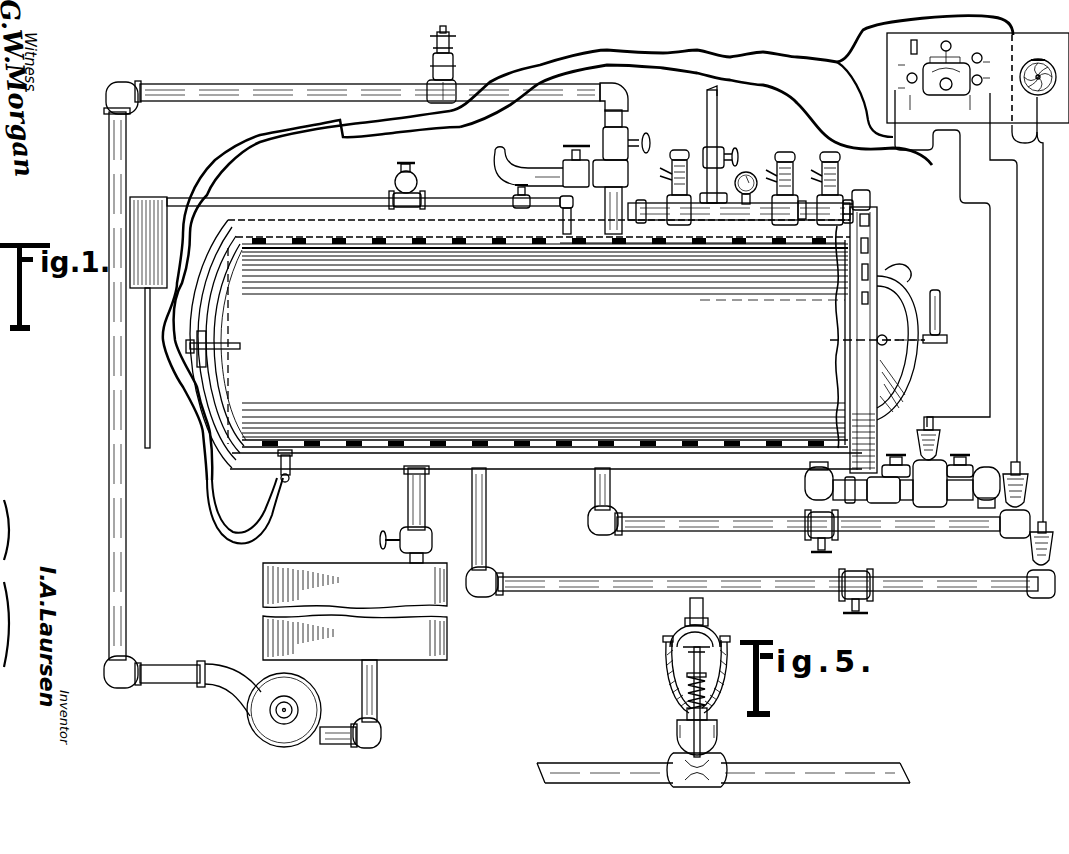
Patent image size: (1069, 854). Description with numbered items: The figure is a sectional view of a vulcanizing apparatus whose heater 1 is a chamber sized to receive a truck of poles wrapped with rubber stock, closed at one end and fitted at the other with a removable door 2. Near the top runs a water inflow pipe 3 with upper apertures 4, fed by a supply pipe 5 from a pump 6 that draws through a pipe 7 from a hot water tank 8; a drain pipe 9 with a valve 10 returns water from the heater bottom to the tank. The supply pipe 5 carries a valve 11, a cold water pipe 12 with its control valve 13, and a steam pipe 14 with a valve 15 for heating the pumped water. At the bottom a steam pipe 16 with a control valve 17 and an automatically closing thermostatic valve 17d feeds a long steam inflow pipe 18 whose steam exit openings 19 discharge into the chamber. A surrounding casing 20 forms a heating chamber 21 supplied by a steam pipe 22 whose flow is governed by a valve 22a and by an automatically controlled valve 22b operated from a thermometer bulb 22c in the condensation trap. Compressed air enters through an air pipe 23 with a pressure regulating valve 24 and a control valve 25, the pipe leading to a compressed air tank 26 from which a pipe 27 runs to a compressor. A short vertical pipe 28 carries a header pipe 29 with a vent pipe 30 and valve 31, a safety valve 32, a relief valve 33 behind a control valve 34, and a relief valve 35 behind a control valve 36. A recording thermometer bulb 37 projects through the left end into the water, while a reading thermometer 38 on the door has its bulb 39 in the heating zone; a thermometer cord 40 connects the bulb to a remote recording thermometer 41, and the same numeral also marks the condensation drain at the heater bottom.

In FIG. 1, the heater 1 is at (226, 417).
In FIG. 1, the removable door 2 is at (883, 280).
In FIG. 1, the water inflow pipe 3 is at (578, 262).
In FIG. 1, the apertures 4 is at (421, 245).
In FIG. 1, the supply pipe 5 is at (113, 528).
In FIG. 1, the pump 6 is at (297, 727).
In FIG. 1, the pipe 7 is at (379, 707).
In FIG. 1, the hot water tank 8 is at (433, 645).
In FIG. 1, the drain pipe 9 is at (421, 500).
In FIG. 1, the valve 10 is at (429, 534).
In FIG. 1, the valve 11 is at (626, 131).
In FIG. 1, the cold water pipe 12 is at (513, 166).
In FIG. 1, the control valve 13 is at (578, 148).
In FIG. 1, the steam pipe 14 is at (451, 41).
In FIG. 1, the valve 15 is at (432, 63).
In FIG. 1, the steam pipe 16 is at (695, 524).
In FIG. 5, the steam pipe 16 is at (627, 766).
In FIG. 1, the control valve 17 is at (810, 538).
In FIG. 1, the valve 17d is at (1027, 491).
In FIG. 5, the valve 17d is at (668, 679).
In FIG. 1, the steam inflow pipe 18 is at (465, 441).
In FIG. 1, the steam exit openings 19 is at (381, 445).
In FIG. 1, the casing 20 is at (357, 468).
In FIG. 1, the heating chamber 21 is at (280, 459).
In FIG. 1, the steam pipe 22 is at (573, 587).
In FIG. 1, the valve 22a is at (841, 575).
In FIG. 1, the automatically controlled valve 22b is at (1030, 545).
In FIG. 1, the thermometer bulb 22c is at (289, 474).
In FIG. 1, the air pipe 23 is at (333, 199).
In FIG. 1, the pressure regulating valve 24 is at (421, 192).
In FIG. 1, the control valve 25 is at (516, 193).
In FIG. 1, the compressed air tank 26 is at (170, 202).
In FIG. 1, the pipe 27 is at (151, 413).
In FIG. 1, the vertical pipe 28 is at (693, 261).
In FIG. 1, the header pipe 29 is at (724, 200).
In FIG. 1, the vent pipe 30 is at (718, 140).
In FIG. 1, the valve 31 is at (706, 158).
In FIG. 1, the safety valve 32 is at (668, 181).
In FIG. 1, the relief valve 33 is at (794, 177).
In FIG. 1, the control valve 34 is at (800, 258).
In FIG. 1, the relief valve 35 is at (838, 160).
In FIG. 1, the control valve 36 is at (837, 191).
In FIG. 1, the recording thermometer bulb 37 is at (225, 344).
In FIG. 1, the reading thermometer 38 is at (941, 331).
In FIG. 1, the bulb 39 is at (830, 342).
In FIG. 1, the thermometer cord 40 is at (747, 55).
In FIG. 1, the recording thermometer 41 is at (1040, 62).